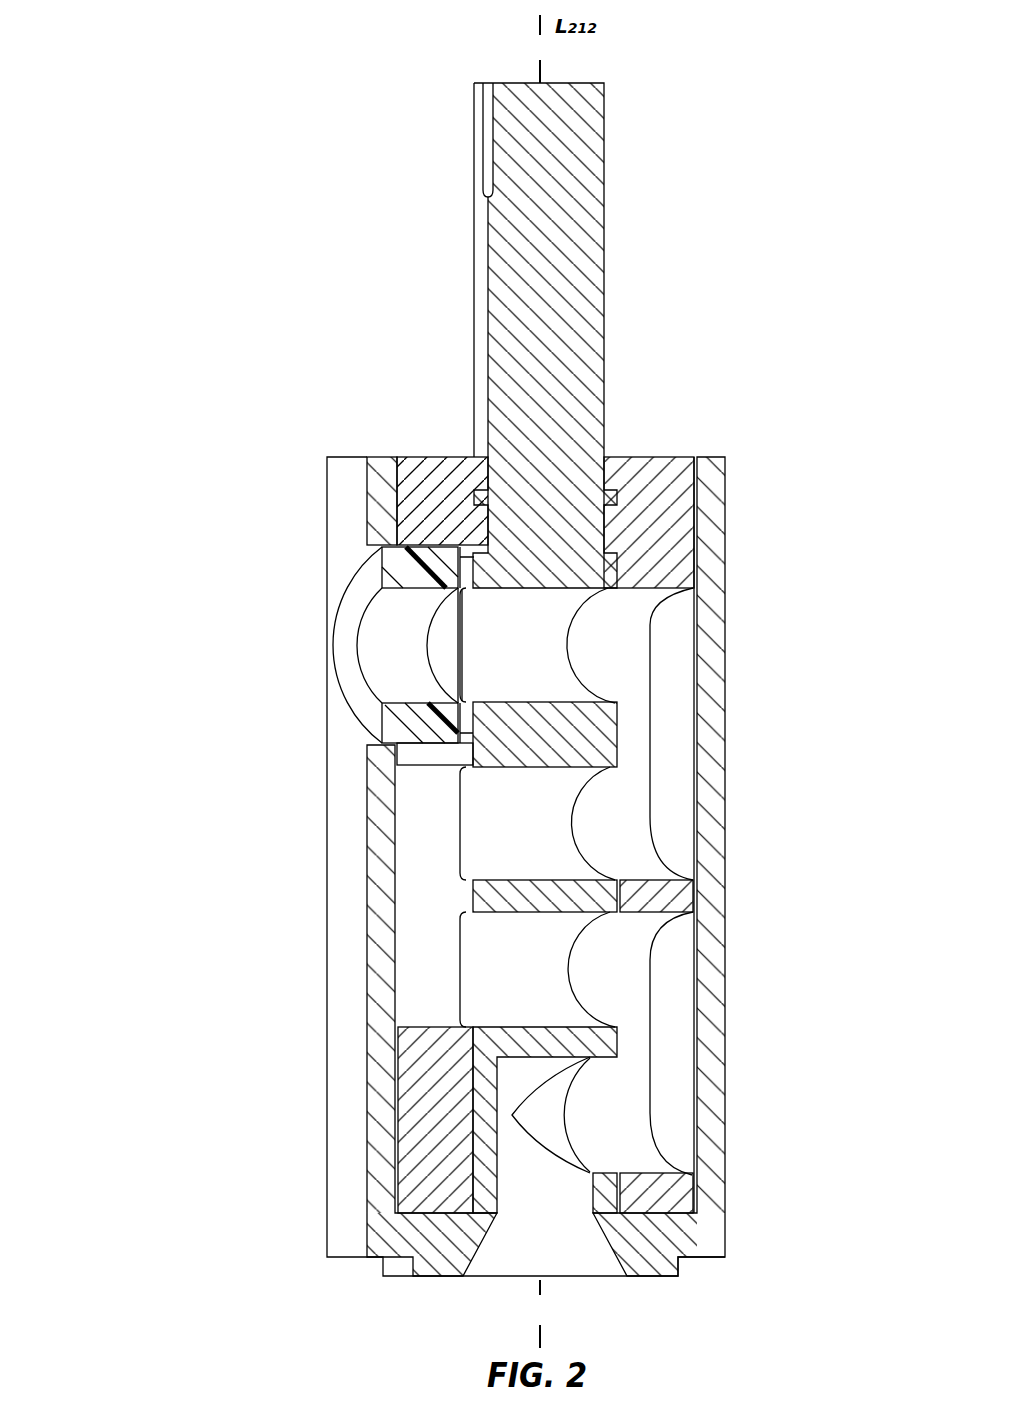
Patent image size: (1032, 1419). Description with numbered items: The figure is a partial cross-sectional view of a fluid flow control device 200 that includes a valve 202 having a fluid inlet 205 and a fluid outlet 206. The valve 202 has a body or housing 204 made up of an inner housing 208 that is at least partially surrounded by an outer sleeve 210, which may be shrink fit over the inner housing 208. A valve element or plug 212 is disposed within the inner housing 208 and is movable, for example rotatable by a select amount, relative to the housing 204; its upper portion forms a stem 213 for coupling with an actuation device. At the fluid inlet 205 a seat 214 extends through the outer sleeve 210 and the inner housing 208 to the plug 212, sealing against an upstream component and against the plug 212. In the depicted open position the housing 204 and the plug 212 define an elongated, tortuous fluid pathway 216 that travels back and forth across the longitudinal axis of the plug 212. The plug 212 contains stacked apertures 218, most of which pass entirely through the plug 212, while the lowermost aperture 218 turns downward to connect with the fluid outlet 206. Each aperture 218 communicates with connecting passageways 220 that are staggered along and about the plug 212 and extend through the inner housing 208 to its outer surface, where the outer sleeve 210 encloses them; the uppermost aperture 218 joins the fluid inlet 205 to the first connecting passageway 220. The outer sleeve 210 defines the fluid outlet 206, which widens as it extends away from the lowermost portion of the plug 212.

The fluid flow control device 200 is at (148, 136).
The valve 202 is at (735, 294).
The housing 204 is at (693, 493).
The fluid inlet 205 is at (387, 645).
The fluid outlet 206 is at (550, 1281).
The inner housing 208 is at (467, 462).
The outer sleeve 210 is at (357, 515).
The plug 212 is at (560, 523).
The stem 213 is at (543, 287).
The seat 214 is at (375, 693).
The fluid pathway 216 is at (442, 978).
The apertures 218 is at (537, 677).
The connecting passageways 220 is at (613, 653).